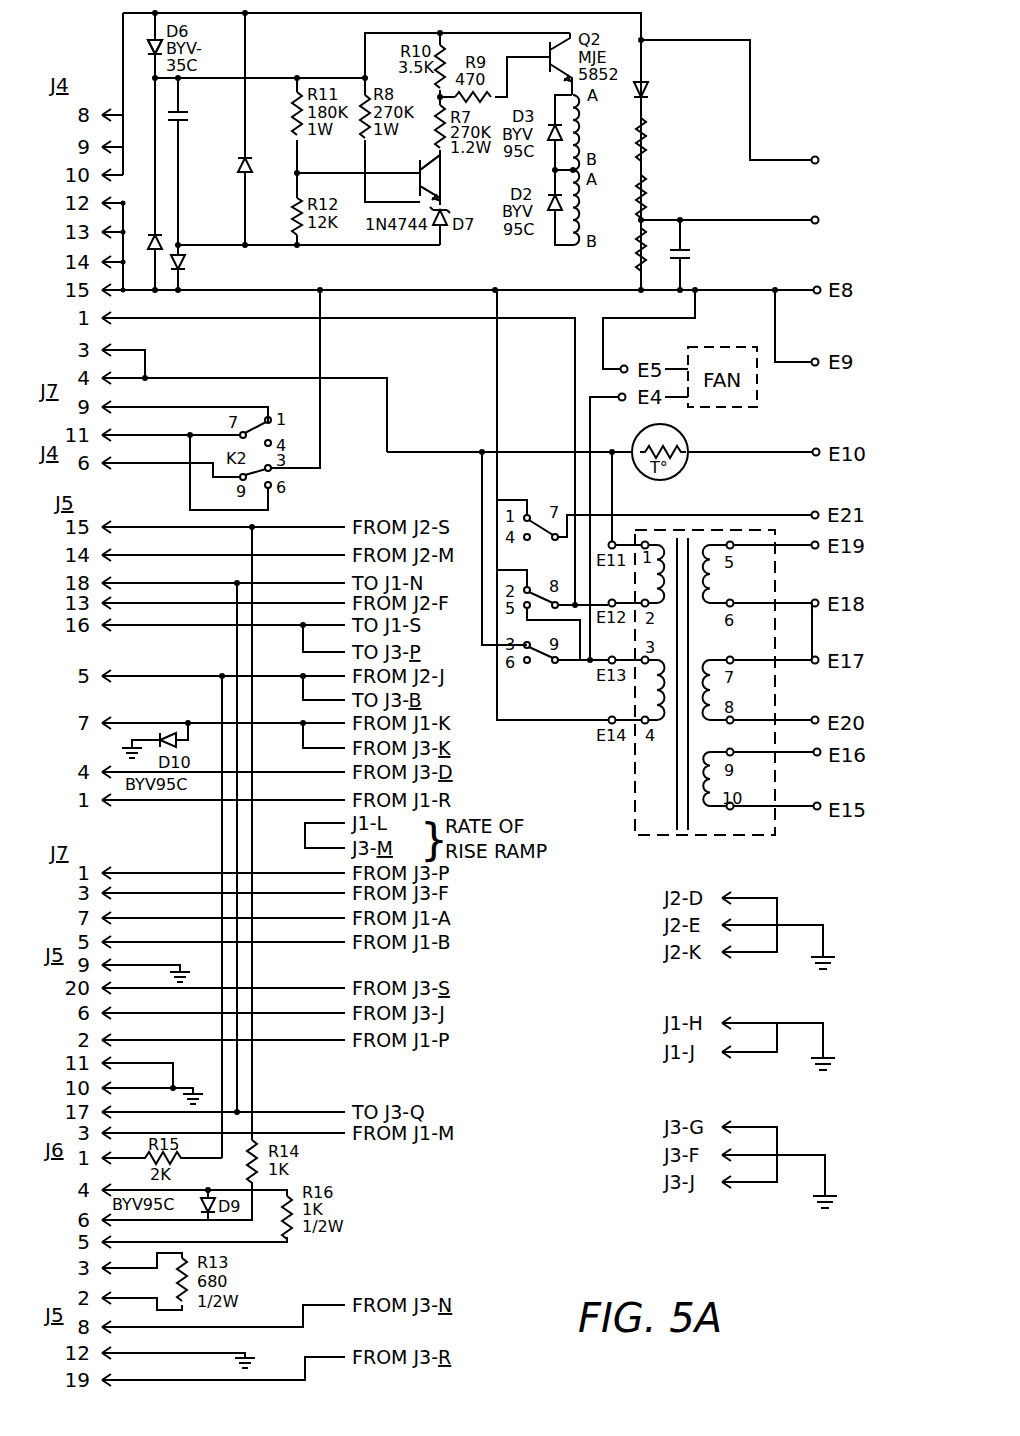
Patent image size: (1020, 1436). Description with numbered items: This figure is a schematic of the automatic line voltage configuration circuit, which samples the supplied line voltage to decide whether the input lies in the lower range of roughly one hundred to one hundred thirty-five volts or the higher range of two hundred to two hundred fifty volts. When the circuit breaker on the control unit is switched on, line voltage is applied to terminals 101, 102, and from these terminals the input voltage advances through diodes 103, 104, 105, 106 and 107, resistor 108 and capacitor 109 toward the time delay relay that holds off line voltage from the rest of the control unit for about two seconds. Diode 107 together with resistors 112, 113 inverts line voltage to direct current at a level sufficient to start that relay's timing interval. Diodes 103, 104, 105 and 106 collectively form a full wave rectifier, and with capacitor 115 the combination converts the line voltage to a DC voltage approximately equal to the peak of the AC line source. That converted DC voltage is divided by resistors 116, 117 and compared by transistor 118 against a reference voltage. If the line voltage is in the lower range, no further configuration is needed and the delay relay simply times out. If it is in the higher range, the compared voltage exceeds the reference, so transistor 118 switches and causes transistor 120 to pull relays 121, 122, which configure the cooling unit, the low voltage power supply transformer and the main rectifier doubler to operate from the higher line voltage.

The terminal 101 is at (836, 138).
The terminal 102 is at (826, 208).
The diode 103 is at (226, 264).
The diode 104 is at (147, 222).
The diode 105 is at (210, 48).
The diode 106 is at (268, 142).
The diode 107 is at (678, 73).
The resistor 108 is at (598, 268).
The capacitor 109 is at (718, 242).
The resistor 112 is at (683, 122).
The resistor 113 is at (684, 182).
The capacitor 115 is at (210, 100).
The resistor 116 is at (292, 108).
The resistor 117 is at (292, 226).
The transistor 118 is at (432, 168).
The transistor 120 is at (640, 26).
The relay 121 is at (633, 106).
The relay 122 is at (634, 168).